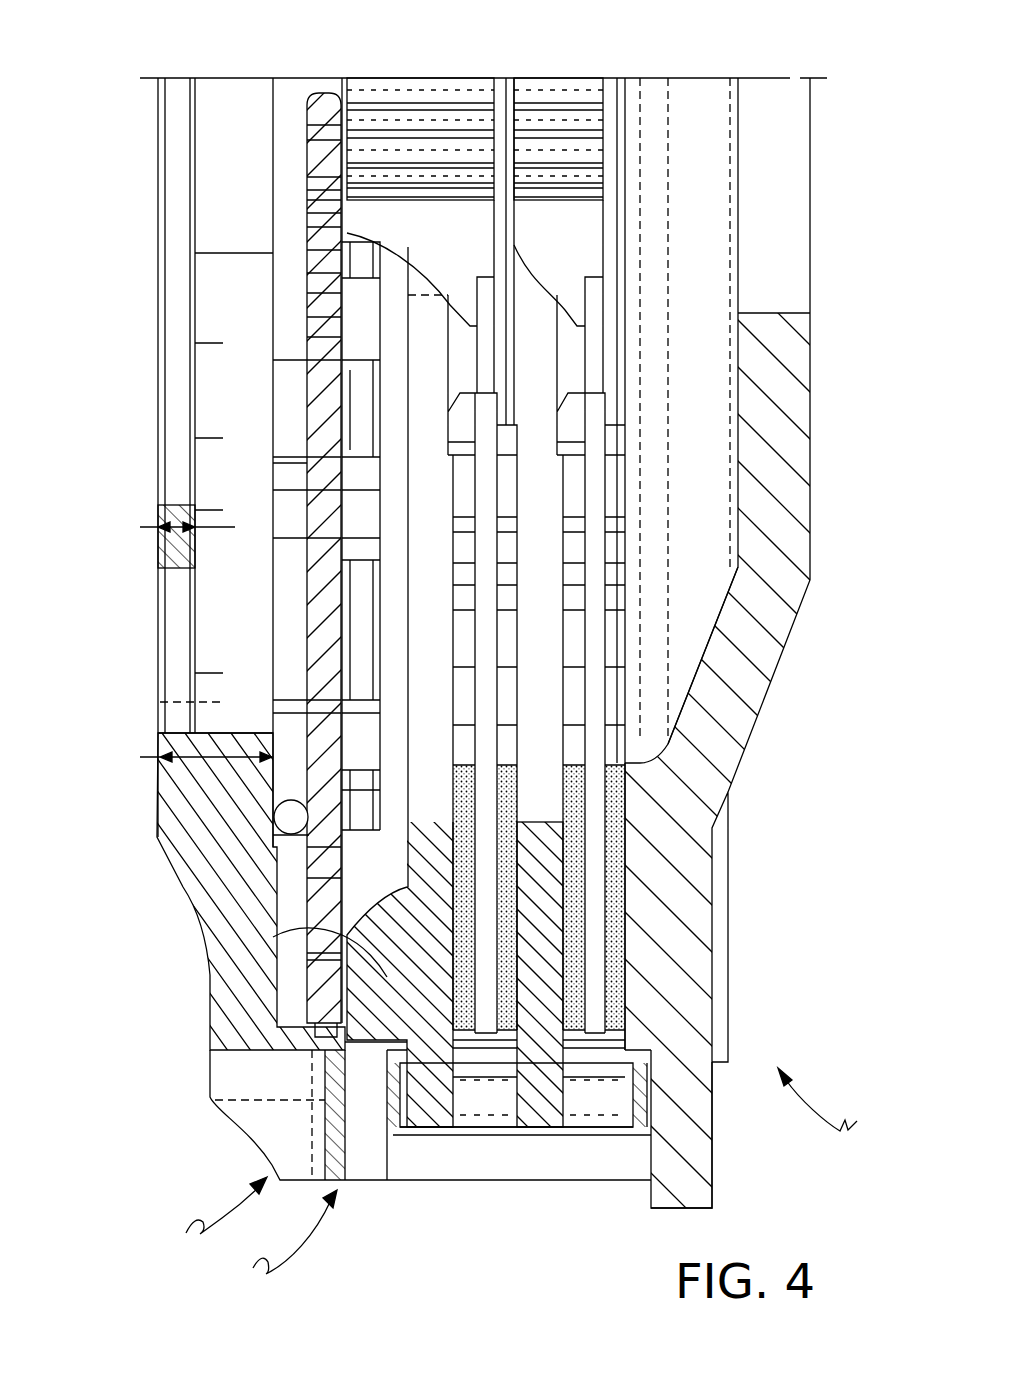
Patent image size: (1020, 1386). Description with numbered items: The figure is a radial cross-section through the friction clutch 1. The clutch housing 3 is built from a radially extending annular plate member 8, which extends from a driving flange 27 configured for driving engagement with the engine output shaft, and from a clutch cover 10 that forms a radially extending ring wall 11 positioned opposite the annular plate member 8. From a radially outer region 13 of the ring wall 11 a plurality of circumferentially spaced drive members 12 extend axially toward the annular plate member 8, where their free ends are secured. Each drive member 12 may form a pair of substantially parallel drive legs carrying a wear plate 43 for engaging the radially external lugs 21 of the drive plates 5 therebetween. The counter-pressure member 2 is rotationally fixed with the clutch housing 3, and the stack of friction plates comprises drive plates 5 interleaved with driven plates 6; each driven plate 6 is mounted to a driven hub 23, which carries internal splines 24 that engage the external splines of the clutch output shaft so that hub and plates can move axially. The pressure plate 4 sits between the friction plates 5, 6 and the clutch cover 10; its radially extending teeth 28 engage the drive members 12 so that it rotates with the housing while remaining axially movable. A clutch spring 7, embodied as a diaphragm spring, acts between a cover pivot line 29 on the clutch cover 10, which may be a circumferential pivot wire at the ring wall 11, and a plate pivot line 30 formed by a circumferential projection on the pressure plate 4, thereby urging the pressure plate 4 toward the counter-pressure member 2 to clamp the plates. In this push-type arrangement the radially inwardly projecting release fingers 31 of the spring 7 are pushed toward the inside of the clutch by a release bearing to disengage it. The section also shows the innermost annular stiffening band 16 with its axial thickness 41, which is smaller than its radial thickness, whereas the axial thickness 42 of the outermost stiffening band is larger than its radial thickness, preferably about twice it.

The friction clutch 1 is at (833, 1103).
The counter-pressure member 2 is at (670, 930).
The clutch housing 3 is at (287, 1245).
The pressure plate 4 is at (305, 1052).
The drive plate 5 is at (548, 985).
The driven plate 6 is at (488, 853).
The clutch spring 7 is at (318, 621).
The annular plate member 8 is at (750, 690).
The clutch cover 10 is at (276, 872).
The ring wall 11 is at (276, 872).
The drive member 12 is at (490, 1157).
The radially outer region 13 is at (205, 1218).
The innermost annular stiffening band 16 is at (188, 535).
The radially external lug 21 is at (540, 1092).
The driven hub 23 is at (425, 218).
The internal splines 24 is at (450, 107).
The driving flange 27 is at (775, 387).
The radially extending teeth 28 is at (433, 1090).
The cover pivot line 29 is at (285, 820).
The plate pivot line 30 is at (420, 968).
The release fingers 31 is at (318, 132).
The axial thickness 41 is at (152, 527).
The axial thickness 42 is at (152, 757).
The wear plate 43 is at (490, 1097).